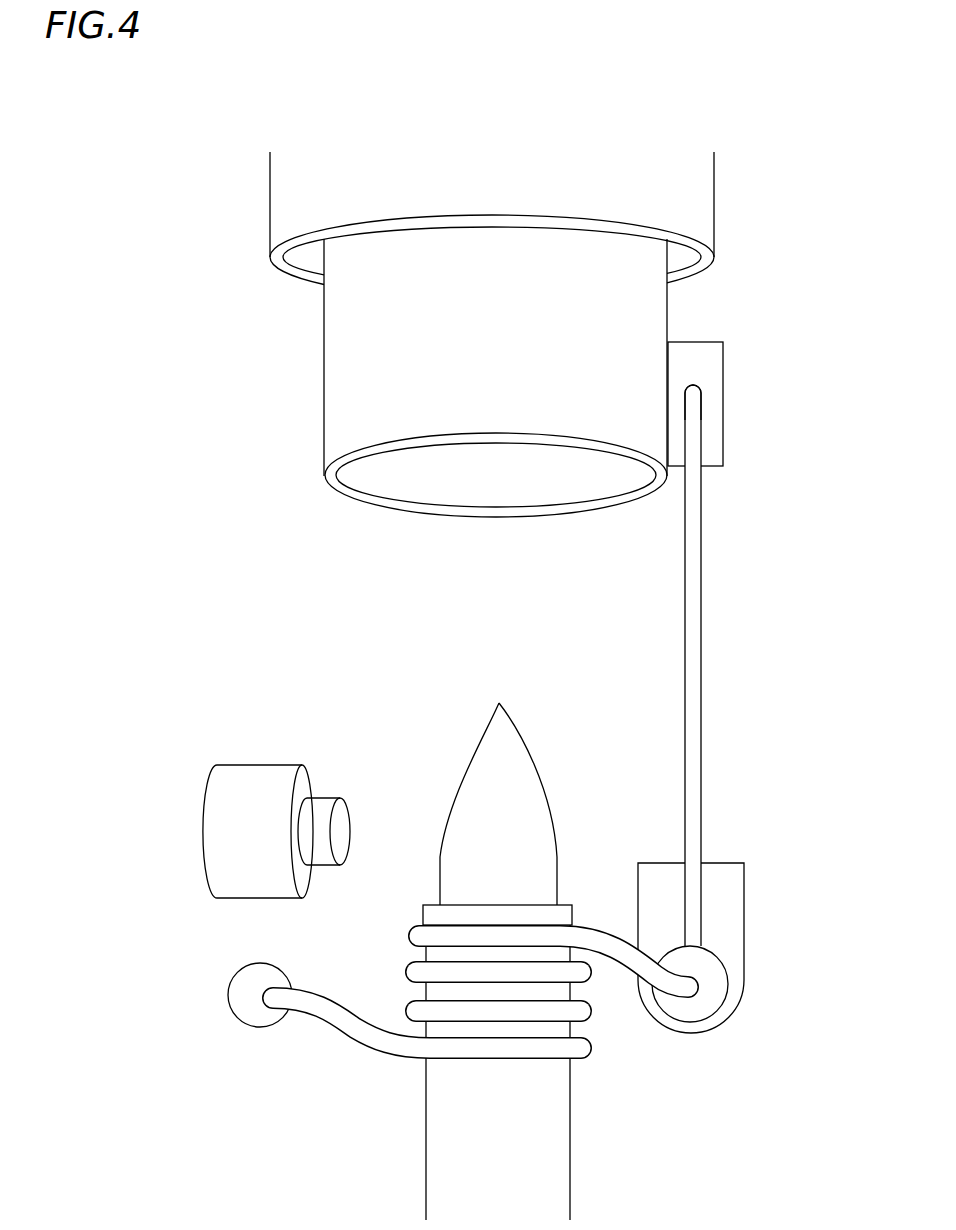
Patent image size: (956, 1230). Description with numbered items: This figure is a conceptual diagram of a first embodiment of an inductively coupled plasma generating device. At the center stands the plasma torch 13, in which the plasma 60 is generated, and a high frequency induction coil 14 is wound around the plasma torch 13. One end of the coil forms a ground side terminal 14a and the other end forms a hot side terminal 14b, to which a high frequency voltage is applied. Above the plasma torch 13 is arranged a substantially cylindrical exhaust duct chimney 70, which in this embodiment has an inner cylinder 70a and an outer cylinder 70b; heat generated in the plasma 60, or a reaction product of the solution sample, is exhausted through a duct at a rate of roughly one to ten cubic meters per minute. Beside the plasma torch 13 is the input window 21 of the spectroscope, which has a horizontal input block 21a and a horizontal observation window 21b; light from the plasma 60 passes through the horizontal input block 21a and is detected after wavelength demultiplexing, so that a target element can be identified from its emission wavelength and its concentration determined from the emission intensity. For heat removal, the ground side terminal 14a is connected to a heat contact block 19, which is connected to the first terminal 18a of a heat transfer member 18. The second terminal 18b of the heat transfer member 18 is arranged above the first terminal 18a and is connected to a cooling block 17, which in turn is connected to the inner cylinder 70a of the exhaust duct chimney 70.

The plasma torch 13 is at (457, 1148).
The high frequency induction coil 14 is at (528, 1012).
The ground side terminal 14a is at (715, 992).
The hot side terminal 14b is at (258, 1012).
The cooling block 17 is at (702, 362).
The heat transfer member 18 is at (740, 703).
The first terminal 18a is at (693, 930).
The second terminal 18b is at (693, 398).
The heat contact block 19 is at (725, 898).
The input window 21 is at (272, 803).
The horizontal input block 21a is at (265, 785).
The horizontal observation window 21b is at (325, 803).
The plasma 60 is at (508, 767).
The exhaust duct chimney 70 is at (485, 334).
The inner cylinder 70a is at (338, 369).
The outer cylinder 70b is at (282, 217).